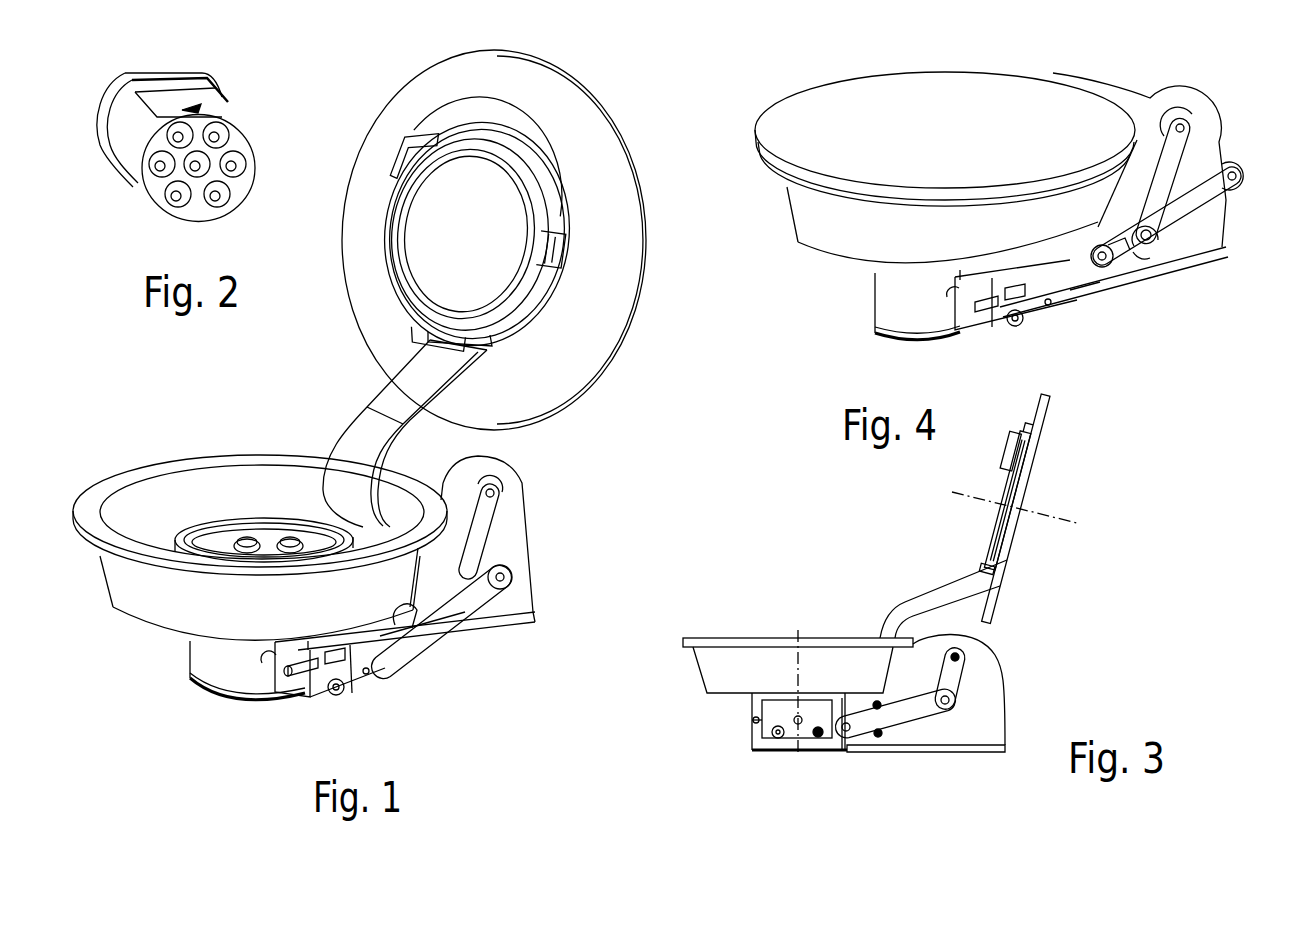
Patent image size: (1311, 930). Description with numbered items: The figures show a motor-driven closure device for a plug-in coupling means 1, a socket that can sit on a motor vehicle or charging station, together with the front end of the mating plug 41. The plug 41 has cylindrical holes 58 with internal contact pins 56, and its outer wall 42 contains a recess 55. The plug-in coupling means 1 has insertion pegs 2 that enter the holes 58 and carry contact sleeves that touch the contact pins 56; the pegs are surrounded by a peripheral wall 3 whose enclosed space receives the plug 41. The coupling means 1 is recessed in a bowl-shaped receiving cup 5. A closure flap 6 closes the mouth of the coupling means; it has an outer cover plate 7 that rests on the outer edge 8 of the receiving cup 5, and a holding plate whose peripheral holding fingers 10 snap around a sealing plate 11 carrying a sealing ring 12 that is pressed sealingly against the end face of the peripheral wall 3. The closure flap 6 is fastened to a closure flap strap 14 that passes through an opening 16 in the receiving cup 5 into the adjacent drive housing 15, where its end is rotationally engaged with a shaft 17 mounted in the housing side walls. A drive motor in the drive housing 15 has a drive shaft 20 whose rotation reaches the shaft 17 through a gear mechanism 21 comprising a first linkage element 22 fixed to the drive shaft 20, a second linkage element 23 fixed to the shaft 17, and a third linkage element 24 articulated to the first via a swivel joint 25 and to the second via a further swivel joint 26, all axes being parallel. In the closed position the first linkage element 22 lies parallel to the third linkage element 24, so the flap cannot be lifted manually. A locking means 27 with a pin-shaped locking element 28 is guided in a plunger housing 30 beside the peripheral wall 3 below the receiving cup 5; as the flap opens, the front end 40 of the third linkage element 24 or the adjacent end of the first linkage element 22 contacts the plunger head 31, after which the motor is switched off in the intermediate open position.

In FIG. 1, the plug-in coupling means 1 is at (247, 522).
In FIG. 1, the insertion pegs 2 is at (236, 512).
In FIG. 1, the peripheral wall 3 is at (260, 522).
In FIG. 1, the receiving cup 5 is at (287, 480).
In FIG. 3, the receiving cup 5 is at (748, 665).
In FIG. 1, the closure flap 6 is at (624, 122).
In FIG. 4, the closure flap 6 is at (796, 99).
In FIG. 3, the closure flap 6 is at (1038, 488).
In FIG. 1, the cover plate 7 is at (556, 110).
In FIG. 1, the outer edge 8 is at (125, 485).
In FIG. 3, the outer edge 8 is at (690, 645).
In FIG. 1, the holding fingers 10 is at (553, 202).
In FIG. 1, the sealing plate 11 is at (486, 248).
In FIG. 1, the sealing ring 12 is at (517, 293).
In FIG. 1, the closure flap strap 14 is at (364, 442).
In FIG. 3, the closure flap strap 14 is at (943, 599).
In FIG. 1, the drive housing 15 is at (522, 520).
In FIG. 4, the drive housing 15 is at (1138, 97).
In FIG. 3, the drive housing 15 is at (926, 693).
In FIG. 1, the opening 16 is at (382, 528).
In FIG. 1, the shaft 17 is at (494, 493).
In FIG. 4, the shaft 17 is at (1183, 126).
In FIG. 4, the drive shaft 20 is at (1106, 263).
In FIG. 4, the gear mechanism 21 is at (1203, 308).
In FIG. 1, the first linkage element 22 is at (410, 612).
In FIG. 4, the first linkage element 22 is at (1120, 250).
In FIG. 1, the second linkage element 23 is at (480, 535).
In FIG. 4, the second linkage element 23 is at (1183, 207).
In FIG. 3, the second linkage element 23 is at (955, 678).
In FIG. 1, the third linkage element 24 is at (450, 612).
In FIG. 4, the third linkage element 24 is at (1192, 153).
In FIG. 3, the third linkage element 24 is at (897, 715).
In FIG. 4, the swivel joint 25 is at (1146, 230).
In FIG. 1, the further swivel joint 26 is at (504, 580).
In FIG. 4, the further swivel joint 26 is at (1237, 176).
In FIG. 1, the locking means 27 is at (359, 682).
In FIG. 4, the locking means 27 is at (1036, 312).
In FIG. 3, the locking means 27 is at (778, 732).
In FIG. 1, the locking element 28 is at (342, 662).
In FIG. 4, the locking element 28 is at (1012, 328).
In FIG. 1, the plunger housing 30 is at (297, 684).
In FIG. 4, the plunger housing 30 is at (968, 326).
In FIG. 3, the plunger housing 30 is at (792, 734).
In FIG. 1, the plunger head 31 is at (398, 632).
In FIG. 4, the plunger head 31 is at (1090, 290).
In FIG. 4, the front end 40 is at (1128, 247).
In FIG. 3, the front end 40 is at (846, 732).
In FIG. 2, the plug 41 is at (255, 92).
In FIG. 2, the outer wall 42 is at (165, 112).
In FIG. 2, the recess 55 is at (193, 108).
In FIG. 2, the contact pins 56 is at (244, 160).
In FIG. 2, the cylindrical holes 58 is at (244, 170).